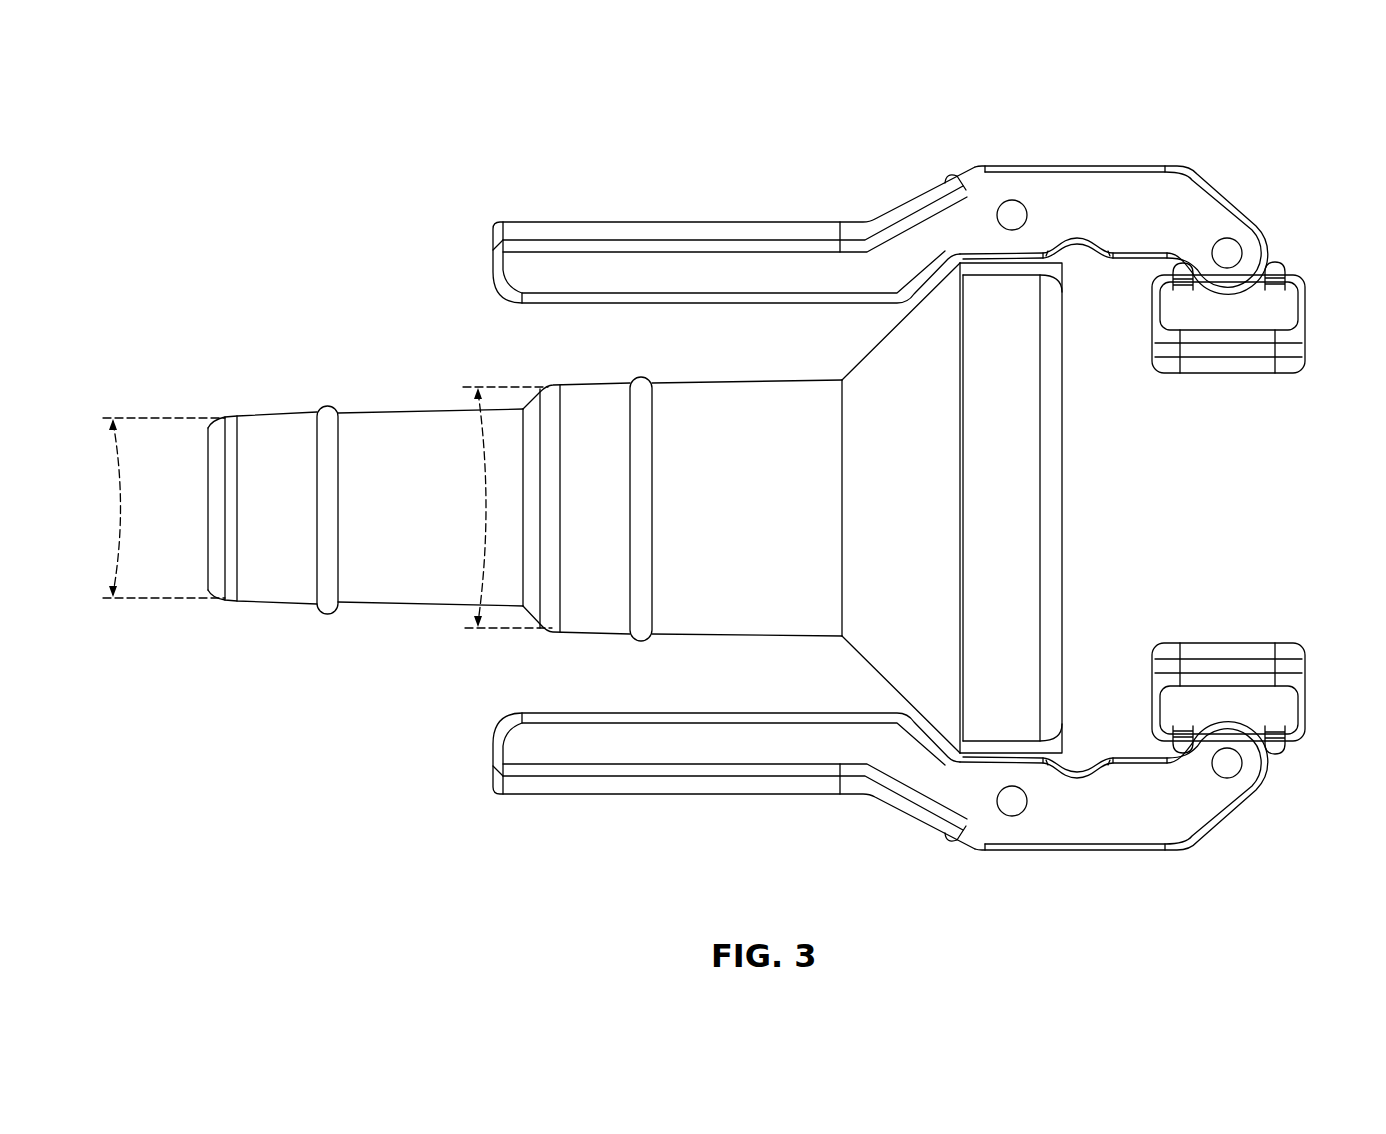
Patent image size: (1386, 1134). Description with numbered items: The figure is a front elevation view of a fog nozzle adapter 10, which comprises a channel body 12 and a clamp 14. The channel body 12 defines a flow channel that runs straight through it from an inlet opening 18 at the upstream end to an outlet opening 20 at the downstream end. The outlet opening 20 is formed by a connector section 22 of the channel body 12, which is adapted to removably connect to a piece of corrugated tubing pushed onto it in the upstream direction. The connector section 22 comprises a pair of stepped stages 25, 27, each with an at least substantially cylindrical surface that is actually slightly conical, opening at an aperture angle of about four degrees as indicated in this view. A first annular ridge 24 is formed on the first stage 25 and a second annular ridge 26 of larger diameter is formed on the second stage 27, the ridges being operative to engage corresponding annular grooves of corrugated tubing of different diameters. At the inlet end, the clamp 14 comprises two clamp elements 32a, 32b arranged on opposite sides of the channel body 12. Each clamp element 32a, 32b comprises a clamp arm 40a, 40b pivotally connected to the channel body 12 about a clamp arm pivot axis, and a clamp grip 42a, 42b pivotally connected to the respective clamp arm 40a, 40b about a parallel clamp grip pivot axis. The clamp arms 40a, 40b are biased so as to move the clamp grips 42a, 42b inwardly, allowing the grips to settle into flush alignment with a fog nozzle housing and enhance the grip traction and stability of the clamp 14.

The fog nozzle adapter 10 is at (108, 120).
The channel body 12 is at (790, 368).
The clamp 14 is at (1290, 790).
The inlet opening 18 is at (1060, 506).
The outlet opening 20 is at (210, 513).
The connector section 22 is at (528, 385).
The first annular ridge 24 is at (328, 406).
The first stepped stage 25 is at (398, 527).
The second annular ridge 26 is at (640, 377).
The second stepped stage 27 is at (760, 528).
The first clamp element 32a is at (1258, 210).
The second clamp element 32b is at (1185, 860).
The first clamp arm 40a is at (1090, 165).
The second clamp arm 40b is at (1210, 790).
The first clamp grip 42a is at (1284, 318).
The second clamp grip 42b is at (1285, 697).